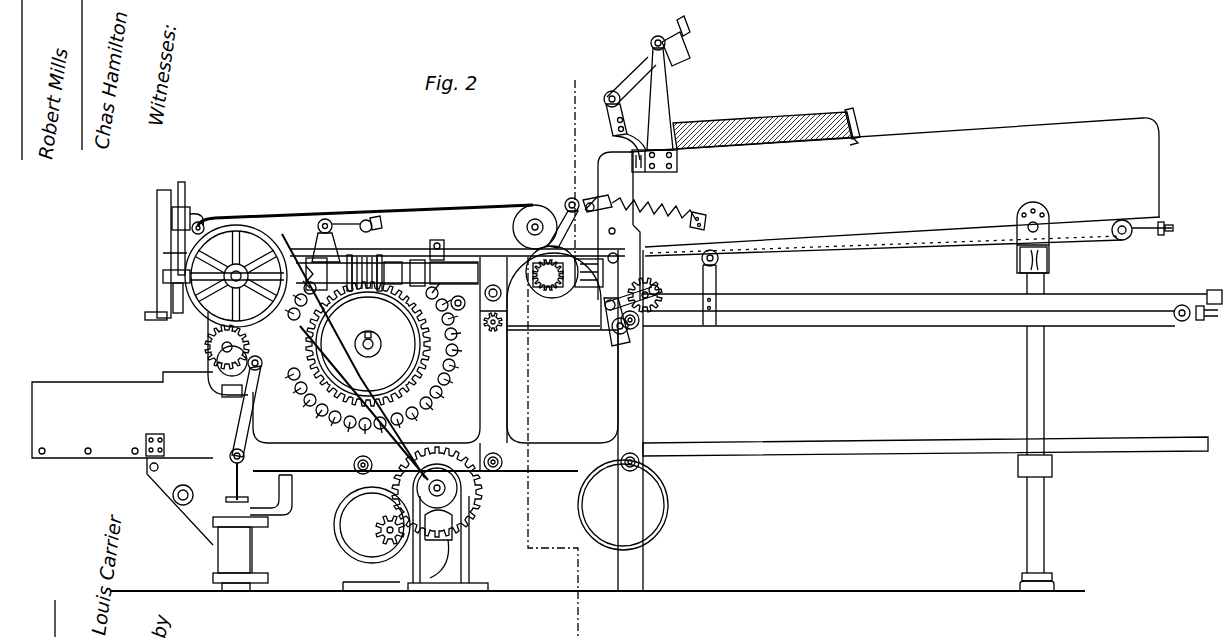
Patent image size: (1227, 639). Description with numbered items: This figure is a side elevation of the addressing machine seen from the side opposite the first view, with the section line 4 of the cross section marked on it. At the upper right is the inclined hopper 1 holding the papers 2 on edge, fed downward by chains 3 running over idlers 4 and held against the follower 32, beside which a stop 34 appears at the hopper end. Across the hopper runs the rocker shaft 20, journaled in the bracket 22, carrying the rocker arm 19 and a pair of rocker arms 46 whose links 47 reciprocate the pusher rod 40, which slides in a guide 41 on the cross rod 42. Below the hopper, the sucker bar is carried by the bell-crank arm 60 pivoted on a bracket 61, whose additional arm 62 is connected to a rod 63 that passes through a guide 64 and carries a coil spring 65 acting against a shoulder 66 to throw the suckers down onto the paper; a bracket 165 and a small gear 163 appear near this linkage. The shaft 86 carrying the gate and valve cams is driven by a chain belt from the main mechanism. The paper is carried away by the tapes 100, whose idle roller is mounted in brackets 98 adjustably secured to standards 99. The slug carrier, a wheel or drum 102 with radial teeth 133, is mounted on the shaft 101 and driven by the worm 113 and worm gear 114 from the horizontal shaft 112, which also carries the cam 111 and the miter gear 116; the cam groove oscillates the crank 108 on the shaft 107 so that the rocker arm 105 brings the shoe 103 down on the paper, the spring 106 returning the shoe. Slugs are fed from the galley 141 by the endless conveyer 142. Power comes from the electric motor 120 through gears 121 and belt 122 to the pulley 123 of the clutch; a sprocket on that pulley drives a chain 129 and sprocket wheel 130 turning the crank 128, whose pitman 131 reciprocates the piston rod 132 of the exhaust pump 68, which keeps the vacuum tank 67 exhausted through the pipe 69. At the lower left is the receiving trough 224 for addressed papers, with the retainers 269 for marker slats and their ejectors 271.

The hopper 1 is at (952, 130).
The papers 2 is at (825, 112).
The chains 3 is at (930, 250).
The idlers 4 is at (586, 76).
The rocker arm 19 is at (604, 108).
The rocker shaft 20 is at (608, 122).
The bracket 22 is at (620, 138).
The follower 32 is at (856, 116).
The stop block 34 is at (858, 134).
The rod 40 is at (690, 33).
The guide 41 is at (682, 60).
The cross rod 42 is at (654, 38).
The rocker arm 46 is at (605, 82).
The link 47 is at (637, 85).
The crank arm 60 is at (563, 212).
The bracket 61 is at (612, 203).
The additional arm 62 is at (600, 196).
The rod 63 is at (595, 204).
The guide 64 is at (698, 214).
The coil spring 65 is at (640, 206).
The shoulder 66 is at (618, 210).
The tank 67 is at (672, 525).
The exhaust pump 68 is at (225, 536).
The pipe 69 is at (293, 493).
The shaft 86 is at (650, 328).
The bracket 98 is at (172, 216).
The standard 99 is at (182, 182).
The tapes 100 is at (223, 213).
The shaft 101 is at (372, 340).
The wheel or drum 102 is at (308, 420).
The shoe 103 is at (396, 190).
The rocker arm 105 is at (350, 218).
The spring 106 is at (400, 165).
The shaft 107 is at (325, 219).
The crank 108 is at (316, 237).
The cam 111 is at (300, 229).
The horizontal shaft 112 is at (433, 252).
The worm 113 is at (398, 215).
The worm gear 114 is at (440, 396).
The miter-gear 116 is at (540, 222).
The electric motor 120 is at (340, 552).
The gears 121 is at (389, 546).
The belt 122 is at (350, 450).
The pulley 123 is at (185, 282).
The crank 128 is at (232, 372).
The chain 129 is at (207, 337).
The sprocket wheel 130 is at (230, 360).
The pitman 131 is at (250, 410).
The piston rod 132 is at (257, 472).
The radial teeth 133 is at (440, 392).
The galley 141 is at (895, 306).
The endless conveyer 142 is at (567, 330).
The gear 163 is at (662, 298).
The bracket 165 is at (622, 258).
The receiving trough 224 is at (125, 452).
The retainers 269 is at (157, 206).
The ejectors 271 is at (148, 316).